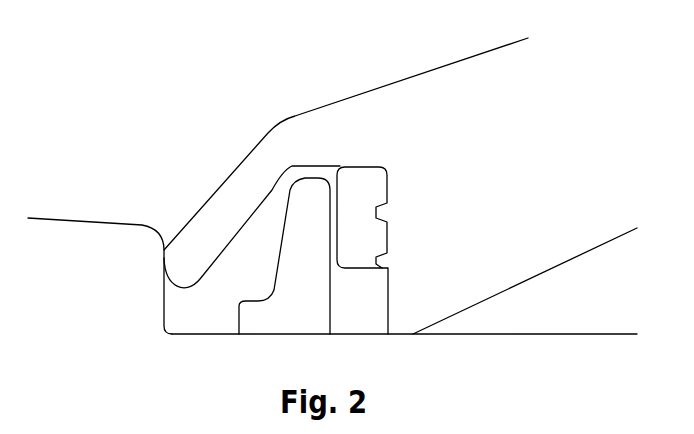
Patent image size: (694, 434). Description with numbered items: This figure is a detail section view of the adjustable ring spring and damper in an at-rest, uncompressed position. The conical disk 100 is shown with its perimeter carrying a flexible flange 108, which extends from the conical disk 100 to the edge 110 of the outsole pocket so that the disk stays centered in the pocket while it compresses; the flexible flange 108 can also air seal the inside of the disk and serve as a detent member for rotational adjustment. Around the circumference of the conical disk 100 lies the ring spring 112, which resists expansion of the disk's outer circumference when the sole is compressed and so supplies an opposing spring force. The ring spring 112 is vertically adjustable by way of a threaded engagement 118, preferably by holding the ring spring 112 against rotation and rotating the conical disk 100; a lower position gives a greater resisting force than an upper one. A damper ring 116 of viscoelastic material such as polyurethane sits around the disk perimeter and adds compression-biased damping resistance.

The conical disk 100 is at (485, 103).
The flexible flange 108 is at (217, 213).
The edge of pocket 110 is at (163, 255).
The ring spring 112 is at (360, 248).
The damper ring 116 is at (260, 335).
The threaded engagement 118 is at (380, 207).